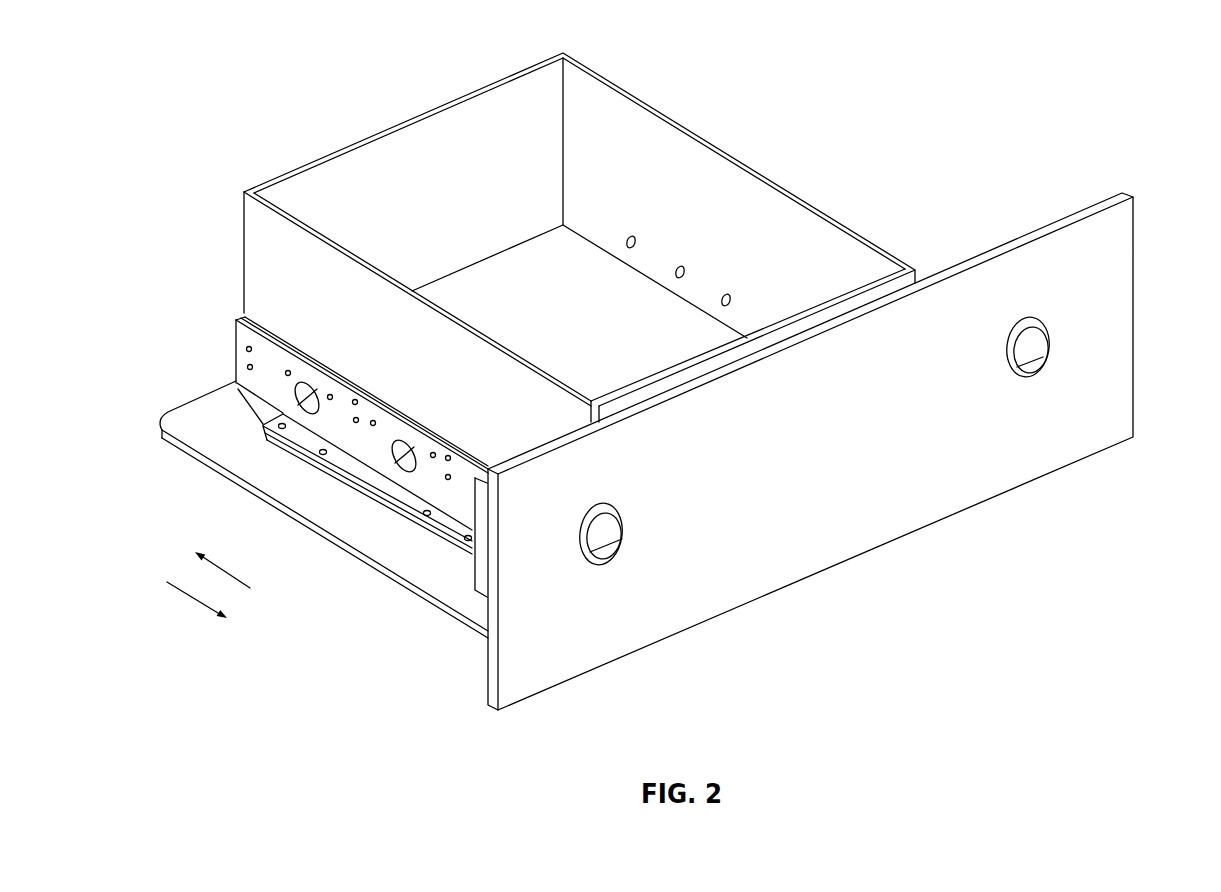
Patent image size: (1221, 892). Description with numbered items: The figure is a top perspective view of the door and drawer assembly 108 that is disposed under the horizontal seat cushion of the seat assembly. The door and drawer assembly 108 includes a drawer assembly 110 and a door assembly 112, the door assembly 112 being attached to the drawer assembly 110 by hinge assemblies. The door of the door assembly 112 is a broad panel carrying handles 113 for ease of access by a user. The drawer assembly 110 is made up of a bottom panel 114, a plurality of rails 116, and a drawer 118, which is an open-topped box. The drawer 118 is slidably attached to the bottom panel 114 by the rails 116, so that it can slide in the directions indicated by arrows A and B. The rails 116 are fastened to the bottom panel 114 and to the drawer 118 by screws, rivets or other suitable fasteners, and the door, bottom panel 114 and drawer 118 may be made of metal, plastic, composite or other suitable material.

The door and drawer assembly 108 is at (675, 381).
The drawer assembly 110 is at (660, 92).
The door assembly 112 is at (1105, 458).
The handles 113 is at (1030, 367).
The bottom panel 114 is at (311, 530).
The rails 116 is at (242, 353).
The drawer 118 is at (257, 239).